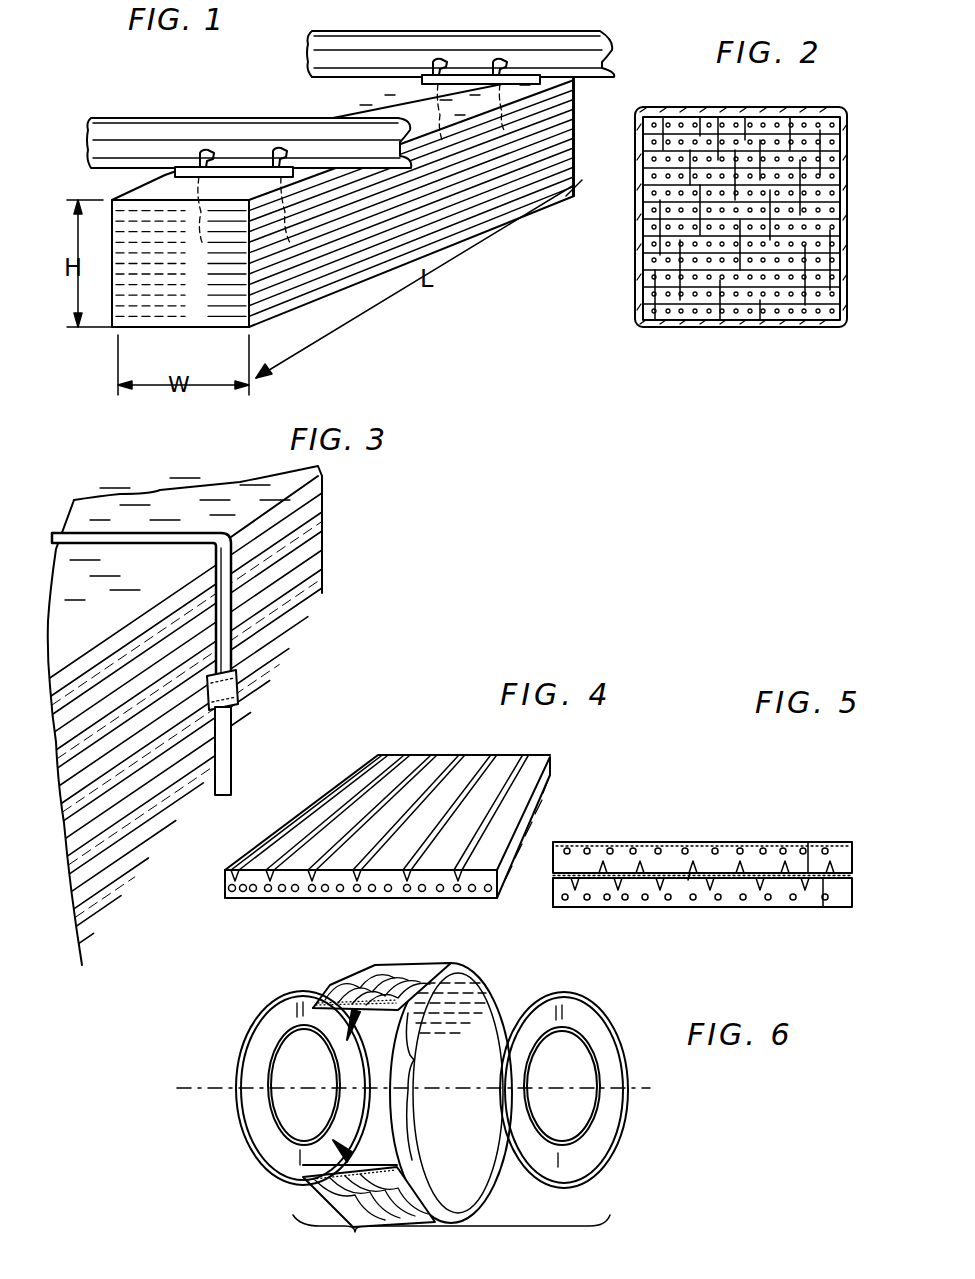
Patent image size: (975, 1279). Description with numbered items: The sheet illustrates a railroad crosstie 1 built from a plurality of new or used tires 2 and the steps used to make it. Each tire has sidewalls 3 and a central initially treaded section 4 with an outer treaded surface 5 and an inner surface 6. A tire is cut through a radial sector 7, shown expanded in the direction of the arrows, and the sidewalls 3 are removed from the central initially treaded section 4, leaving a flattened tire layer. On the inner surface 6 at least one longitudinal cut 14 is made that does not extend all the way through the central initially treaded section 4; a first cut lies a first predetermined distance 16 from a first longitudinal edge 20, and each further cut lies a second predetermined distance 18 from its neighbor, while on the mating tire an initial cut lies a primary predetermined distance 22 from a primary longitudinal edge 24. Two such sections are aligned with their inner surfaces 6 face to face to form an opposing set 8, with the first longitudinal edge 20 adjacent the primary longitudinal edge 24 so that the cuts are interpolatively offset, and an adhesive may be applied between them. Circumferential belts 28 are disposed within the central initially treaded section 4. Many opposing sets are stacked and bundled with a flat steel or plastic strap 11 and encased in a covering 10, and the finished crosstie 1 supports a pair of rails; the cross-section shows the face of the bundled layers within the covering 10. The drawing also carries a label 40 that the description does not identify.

In FIG. 1, the railroad crosstie 1 is at (316, 111).
In FIG. 3, the railroad crosstie 1 is at (316, 650).
In FIG. 1, the tires 2 is at (118, 92).
In FIG. 6, the tires 2 is at (451, 1241).
In FIG. 6, the sidewalls 3 is at (241, 1140).
In FIG. 1, the central initially treaded section 4 is at (369, 104).
In FIG. 2, the central initially treaded section 4 is at (840, 292).
In FIG. 3, the central initially treaded section 4 is at (324, 470).
In FIG. 4, the central initially treaded section 4 is at (335, 792).
In FIG. 5, the central initially treaded section 4 is at (853, 855).
In FIG. 6, the central initially treaded section 4 is at (497, 985).
In FIG. 5, the outer treaded surface 5 is at (762, 837).
In FIG. 6, the outer treaded surface 5 is at (377, 972).
In FIG. 4, the inner surface 6 is at (530, 785).
In FIG. 5, the inner surface 6 is at (808, 877).
In FIG. 6, the inner surface 6 is at (480, 1065).
In FIG. 6, the radial sector 7 is at (418, 1086).
In FIG. 1, the opposing set 8 is at (578, 86).
In FIG. 1, the covering 10 is at (193, 333).
In FIG. 2, the covering 10 is at (847, 253).
In FIG. 3, the strap 11 is at (128, 528).
In FIG. 4, the longitudinal cut 14 is at (473, 770).
In FIG. 5, the longitudinal cut 14 is at (688, 880).
In FIG. 5, the first predetermined distance 16 is at (585, 931).
In FIG. 5, the second predetermined distance 18 is at (552, 914).
In FIG. 5, the first longitudinal edge 20 is at (555, 878).
In FIG. 5, the primary predetermined distance 22 is at (647, 828).
In FIG. 5, the primary longitudinal edge 24 is at (555, 853).
In FIG. 4, the circumferential belts 28 is at (295, 889).
In FIG. 6, the circumferential belts 28 is at (379, 1012).
In FIG. 5, the bond line 40 is at (856, 874).